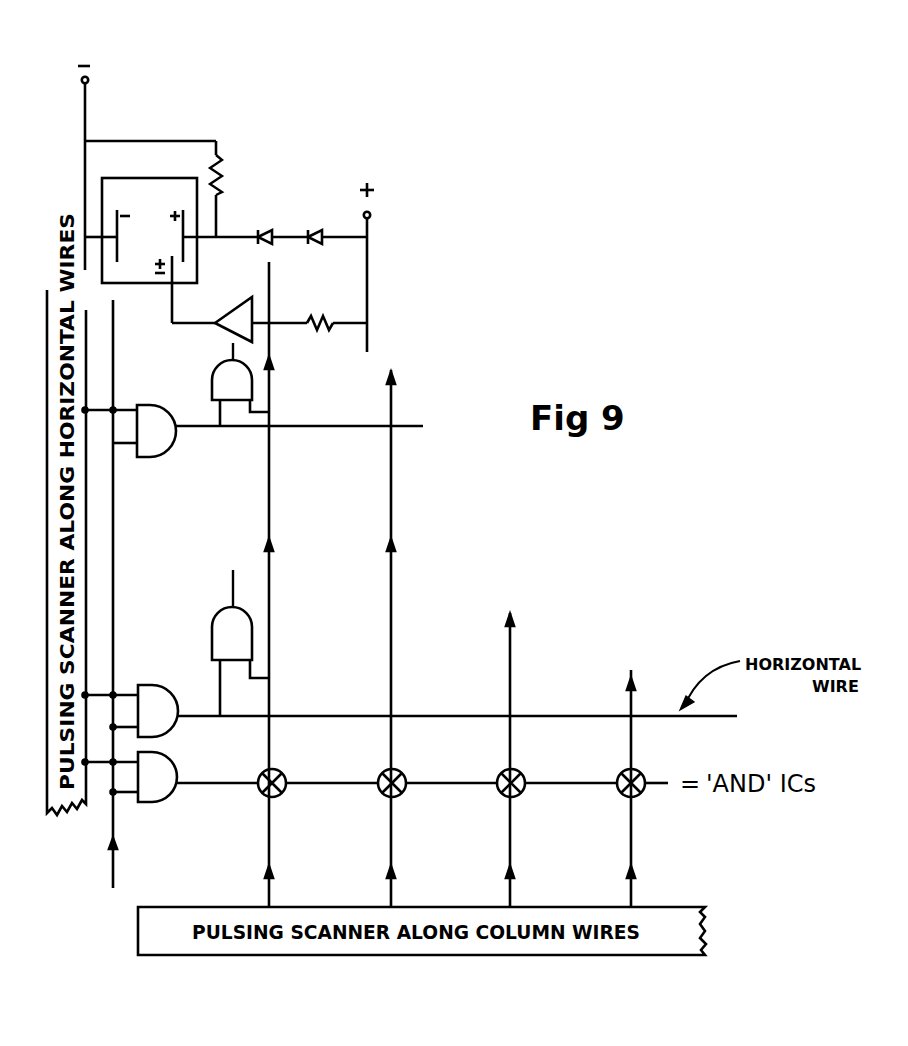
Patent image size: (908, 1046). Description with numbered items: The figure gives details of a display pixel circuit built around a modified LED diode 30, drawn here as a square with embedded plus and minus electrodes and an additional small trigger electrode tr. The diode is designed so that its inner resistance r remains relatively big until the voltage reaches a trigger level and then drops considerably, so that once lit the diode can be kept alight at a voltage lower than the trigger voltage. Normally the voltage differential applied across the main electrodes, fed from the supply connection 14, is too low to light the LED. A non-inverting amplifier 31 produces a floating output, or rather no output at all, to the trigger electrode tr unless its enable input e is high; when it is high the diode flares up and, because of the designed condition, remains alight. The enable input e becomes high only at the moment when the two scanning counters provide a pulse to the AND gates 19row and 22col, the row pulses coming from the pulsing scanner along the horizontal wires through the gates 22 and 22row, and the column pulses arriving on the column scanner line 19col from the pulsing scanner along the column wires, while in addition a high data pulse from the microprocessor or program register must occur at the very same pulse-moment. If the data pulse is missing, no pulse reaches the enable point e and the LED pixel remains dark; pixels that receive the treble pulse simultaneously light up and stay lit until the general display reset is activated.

The LED diode 30 is at (142, 190).
The inner resistance r is at (222, 170).
The trigger electrode tr is at (186, 274).
The supply line 14 is at (372, 291).
The non-inverting amplifier 31 is at (255, 312).
The enable input e is at (227, 471).
The column AND gate 22col is at (250, 390).
The row AND gate 19row is at (160, 447).
The AND gate 22 is at (155, 696).
The row AND gate 22row is at (176, 777).
The column scanner line 19col is at (412, 907).